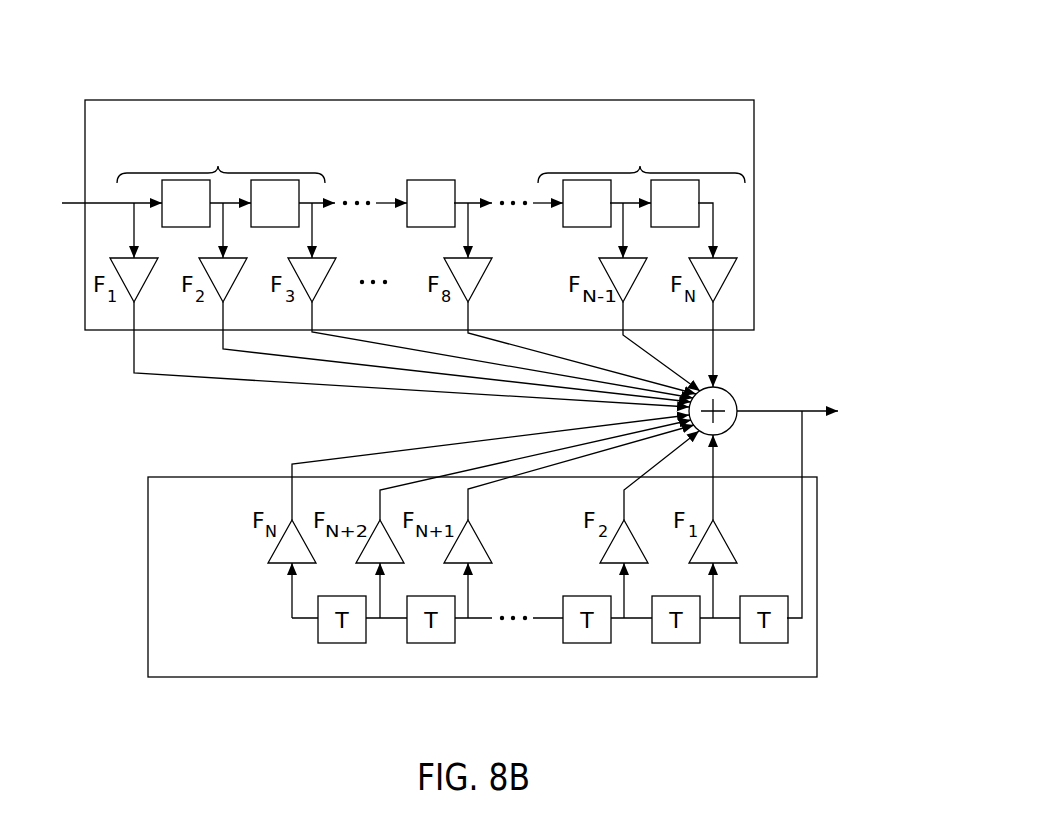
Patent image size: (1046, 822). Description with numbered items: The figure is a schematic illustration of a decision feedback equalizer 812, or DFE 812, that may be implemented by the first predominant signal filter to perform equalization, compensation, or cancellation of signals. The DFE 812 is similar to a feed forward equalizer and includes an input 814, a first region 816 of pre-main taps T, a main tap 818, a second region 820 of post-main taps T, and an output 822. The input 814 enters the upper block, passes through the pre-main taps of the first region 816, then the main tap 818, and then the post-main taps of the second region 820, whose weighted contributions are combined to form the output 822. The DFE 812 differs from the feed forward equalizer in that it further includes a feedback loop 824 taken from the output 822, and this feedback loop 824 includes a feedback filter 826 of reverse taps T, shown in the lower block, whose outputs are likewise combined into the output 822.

The decision feedback equalizer 812 is at (750, 73).
The input 814 is at (77, 204).
The first region of pre-main taps 816 is at (293, 162).
The main tap 818 is at (428, 162).
The second region of post-main taps 820 is at (698, 164).
The output 822 is at (752, 410).
The feedback loop 824 is at (802, 453).
The feedback filter 826 is at (148, 545).